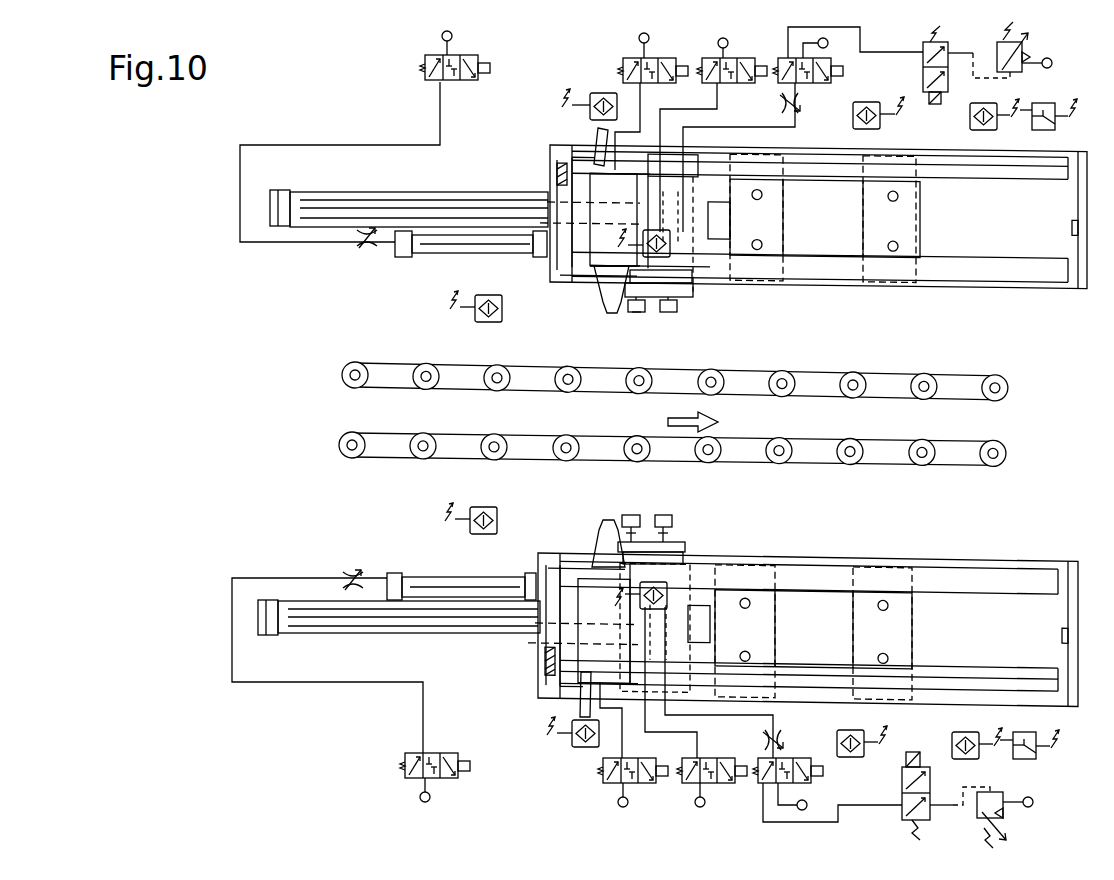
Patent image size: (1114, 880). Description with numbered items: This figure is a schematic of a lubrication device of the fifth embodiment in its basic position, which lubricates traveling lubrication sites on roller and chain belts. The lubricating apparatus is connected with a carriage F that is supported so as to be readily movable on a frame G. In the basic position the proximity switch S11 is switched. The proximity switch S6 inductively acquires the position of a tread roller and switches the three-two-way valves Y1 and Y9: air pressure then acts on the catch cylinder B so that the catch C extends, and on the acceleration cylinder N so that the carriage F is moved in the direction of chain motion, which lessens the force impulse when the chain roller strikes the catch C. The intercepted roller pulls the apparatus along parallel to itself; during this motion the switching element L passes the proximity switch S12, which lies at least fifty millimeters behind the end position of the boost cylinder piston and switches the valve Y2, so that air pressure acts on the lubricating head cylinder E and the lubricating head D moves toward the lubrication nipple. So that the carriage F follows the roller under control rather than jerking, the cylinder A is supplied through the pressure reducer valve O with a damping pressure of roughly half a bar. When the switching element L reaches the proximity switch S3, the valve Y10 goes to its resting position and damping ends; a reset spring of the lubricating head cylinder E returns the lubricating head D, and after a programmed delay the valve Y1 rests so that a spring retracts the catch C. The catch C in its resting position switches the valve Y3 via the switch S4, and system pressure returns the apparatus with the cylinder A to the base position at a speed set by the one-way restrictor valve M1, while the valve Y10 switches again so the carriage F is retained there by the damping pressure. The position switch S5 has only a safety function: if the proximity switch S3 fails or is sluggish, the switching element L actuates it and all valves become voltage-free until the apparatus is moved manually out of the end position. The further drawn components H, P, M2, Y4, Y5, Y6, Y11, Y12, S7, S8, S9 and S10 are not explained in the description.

The cylinder A is at (336, 213).
The catch cylinder B is at (678, 248).
The catch C is at (641, 318).
The lubricating head D is at (606, 298).
The lubricating head cylinder E is at (600, 255).
The carriage F is at (557, 277).
The frame G is at (802, 246).
The pressure regulator H is at (1008, 820).
The switching element L is at (596, 137).
The acceleration cylinder N is at (427, 254).
The pressure reducer valve O is at (1028, 47).
The pressure supply port P is at (708, 797).
The one-way restrictor valve M1 is at (793, 112).
The throttle valve M2 is at (364, 253).
The 3/2-way valve Y1 is at (713, 130).
The 3/2-way valve Y2 is at (651, 99).
The 3/2-way valve Y3 is at (798, 104).
The solenoid valve Y4 is at (697, 712).
The solenoid valve Y5 is at (633, 748).
The solenoid valve Y6 is at (787, 744).
The 3/2-way valve Y9 is at (455, 52).
The 3/2-way valve Y10 is at (899, 81).
The solenoid valve Y11 is at (435, 781).
The solenoid valve Y12 is at (946, 785).
The proximity switch S3 is at (994, 128).
The switch S4 is at (681, 294).
The position switch S5 is at (1048, 128).
The proximity switch S6 is at (476, 296).
The sensor S7 is at (573, 747).
The sensor S8 is at (862, 755).
The sensor S9 is at (977, 733).
The sensor S10 is at (661, 578).
The proximity switch S11 is at (810, 414).
The proximity switch S12 is at (674, 317).